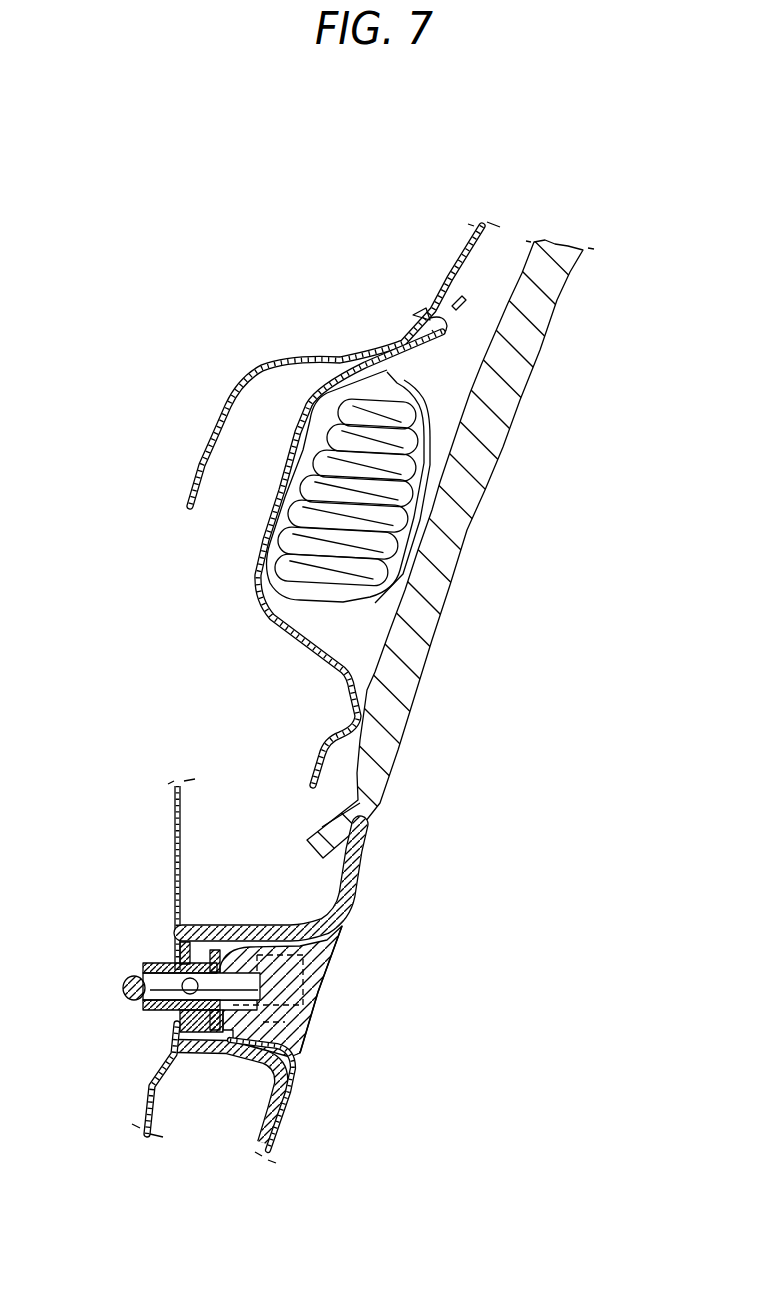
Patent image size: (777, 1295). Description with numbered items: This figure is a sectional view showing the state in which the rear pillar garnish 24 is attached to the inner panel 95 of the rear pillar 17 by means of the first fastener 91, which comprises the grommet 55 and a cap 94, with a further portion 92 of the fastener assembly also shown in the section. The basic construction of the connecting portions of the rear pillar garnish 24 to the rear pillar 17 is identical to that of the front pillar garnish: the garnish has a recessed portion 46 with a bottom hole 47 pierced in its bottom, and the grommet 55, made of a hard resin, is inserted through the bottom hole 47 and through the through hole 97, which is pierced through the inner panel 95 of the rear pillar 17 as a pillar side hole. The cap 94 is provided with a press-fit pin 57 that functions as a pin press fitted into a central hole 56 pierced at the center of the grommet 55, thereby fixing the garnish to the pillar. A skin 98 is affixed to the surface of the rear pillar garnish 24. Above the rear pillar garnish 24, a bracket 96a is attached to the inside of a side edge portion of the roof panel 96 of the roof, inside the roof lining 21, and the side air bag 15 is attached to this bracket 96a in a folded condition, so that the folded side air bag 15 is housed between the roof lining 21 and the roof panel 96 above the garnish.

The side air bag 15 is at (312, 428).
The rear pillar 17 is at (136, 860).
The roof lining 21 is at (532, 350).
The rear pillar garnish 24 is at (269, 1112).
The recessed portion 46 is at (249, 924).
The bottom hole 47 is at (227, 1043).
The grommet 55 is at (150, 963).
The central hole 56 is at (190, 940).
The press-fit pin 57 is at (124, 988).
The first fastener 91 is at (338, 971).
The garnish surface 92 is at (314, 1020).
The cap 94 is at (320, 990).
The inner panel 95 is at (175, 840).
The roof panel 96 is at (476, 231).
The bracket 96a is at (255, 598).
The through hole 97 is at (178, 1006).
The skin 98 is at (300, 1100).